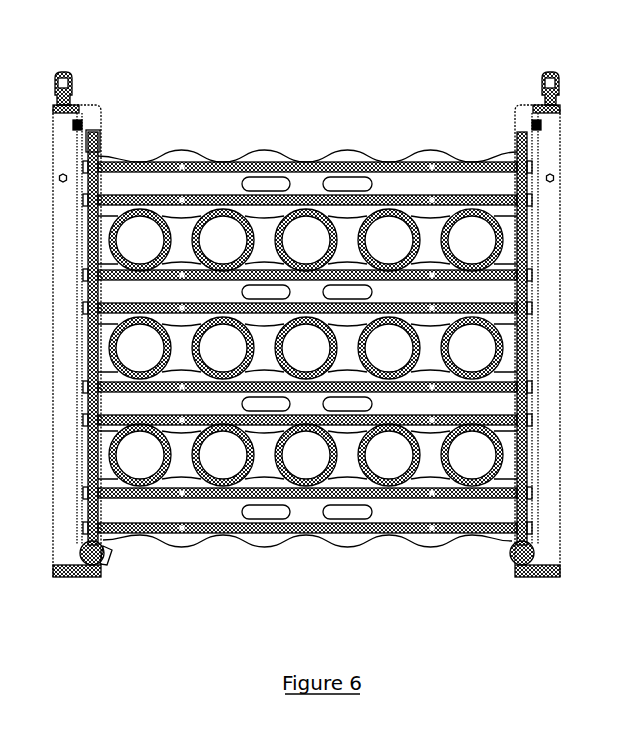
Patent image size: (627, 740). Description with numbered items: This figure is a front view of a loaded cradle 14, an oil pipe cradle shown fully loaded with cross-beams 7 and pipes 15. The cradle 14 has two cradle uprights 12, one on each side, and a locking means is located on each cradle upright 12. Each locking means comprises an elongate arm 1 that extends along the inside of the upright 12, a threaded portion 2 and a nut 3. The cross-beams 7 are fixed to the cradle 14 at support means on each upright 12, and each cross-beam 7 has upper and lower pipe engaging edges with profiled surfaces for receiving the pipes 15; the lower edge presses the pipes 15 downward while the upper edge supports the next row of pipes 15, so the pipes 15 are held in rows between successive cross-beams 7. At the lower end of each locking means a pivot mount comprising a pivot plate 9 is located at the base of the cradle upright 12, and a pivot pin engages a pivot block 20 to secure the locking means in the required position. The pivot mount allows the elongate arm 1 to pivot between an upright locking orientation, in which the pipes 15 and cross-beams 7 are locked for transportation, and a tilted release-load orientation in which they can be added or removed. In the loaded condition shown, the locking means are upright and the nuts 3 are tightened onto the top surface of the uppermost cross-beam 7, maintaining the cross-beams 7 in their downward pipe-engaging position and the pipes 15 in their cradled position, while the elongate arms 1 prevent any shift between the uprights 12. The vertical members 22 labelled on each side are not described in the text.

The elongate arm 1 is at (88, 300).
The threaded portion 2 is at (95, 128).
The nut 3 is at (100, 148).
The cross-beam 7 is at (268, 545).
The pivot plate 9 is at (103, 563).
The cradle upright 12 is at (58, 562).
The cradle 14 is at (303, 122).
The pipe 15 is at (397, 208).
The pivot block 20 is at (100, 567).
The vertical bar 22 is at (90, 452).